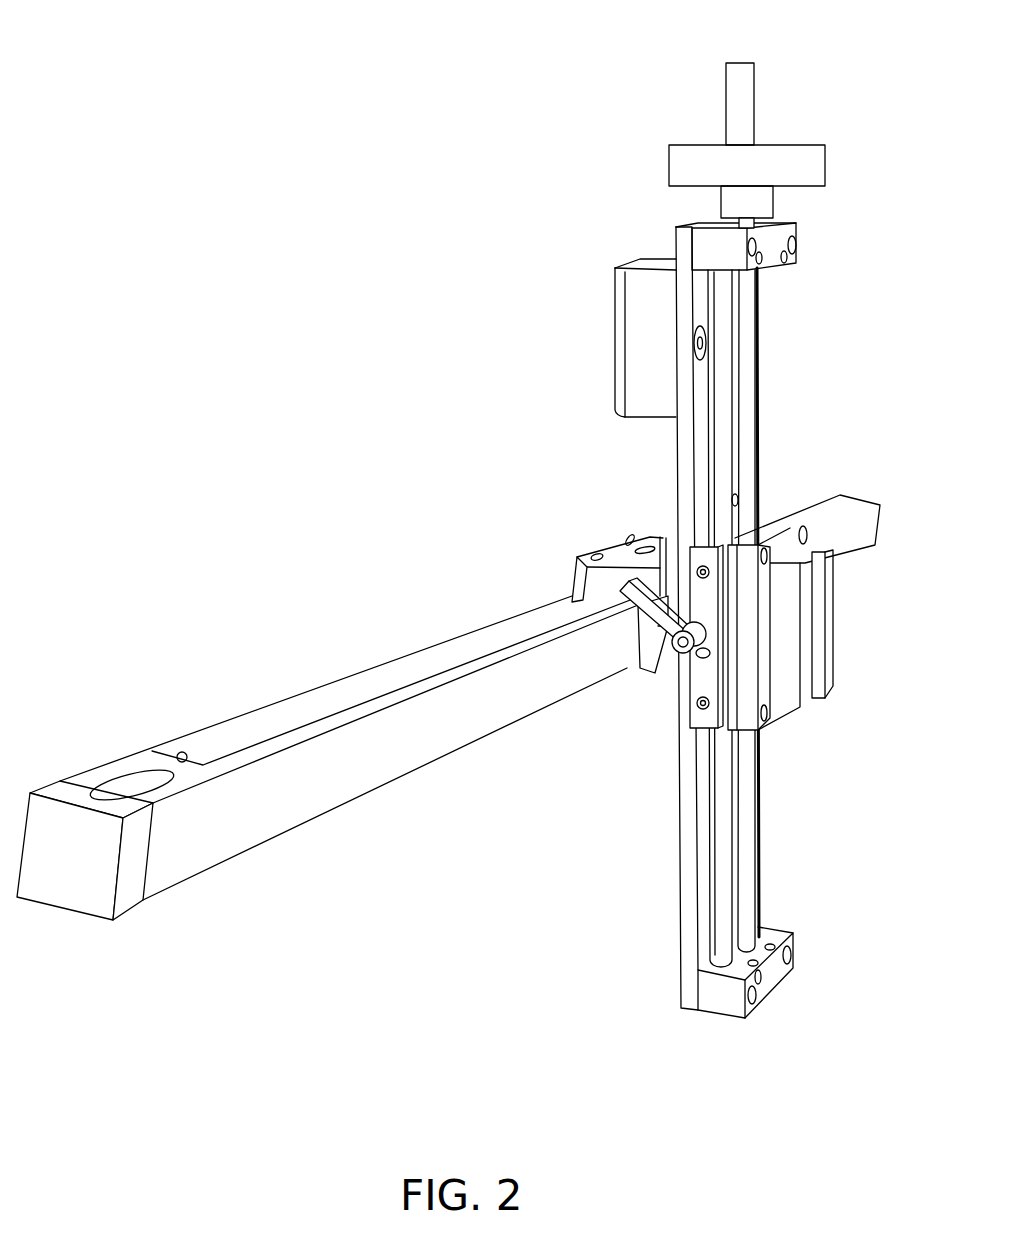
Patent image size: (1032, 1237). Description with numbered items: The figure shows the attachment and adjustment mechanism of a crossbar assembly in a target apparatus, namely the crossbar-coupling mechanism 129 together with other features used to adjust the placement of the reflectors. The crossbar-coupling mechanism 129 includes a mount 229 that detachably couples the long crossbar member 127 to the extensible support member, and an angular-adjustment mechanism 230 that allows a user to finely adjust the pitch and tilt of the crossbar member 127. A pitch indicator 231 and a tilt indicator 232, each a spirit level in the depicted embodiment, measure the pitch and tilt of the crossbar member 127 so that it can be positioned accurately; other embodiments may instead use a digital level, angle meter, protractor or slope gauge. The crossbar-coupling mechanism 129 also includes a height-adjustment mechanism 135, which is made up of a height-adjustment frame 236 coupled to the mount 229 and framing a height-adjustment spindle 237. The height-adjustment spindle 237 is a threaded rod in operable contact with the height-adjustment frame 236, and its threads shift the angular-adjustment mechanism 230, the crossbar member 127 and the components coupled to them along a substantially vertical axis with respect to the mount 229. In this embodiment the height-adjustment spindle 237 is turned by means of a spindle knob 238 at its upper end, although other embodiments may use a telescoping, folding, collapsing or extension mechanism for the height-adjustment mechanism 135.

The crossbar member 127 is at (205, 873).
The crossbar-coupling mechanism 129 is at (363, 766).
The height-adjustment mechanism 135 is at (777, 540).
The mount 229 is at (807, 708).
The angular-adjustment mechanism 230 is at (658, 671).
The pitch indicator 231 is at (593, 553).
The tilt indicator 232 is at (635, 533).
The height-adjustment frame 236 is at (680, 933).
The height-adjustment spindle 237 is at (761, 394).
The spindle knob 238 is at (815, 143).